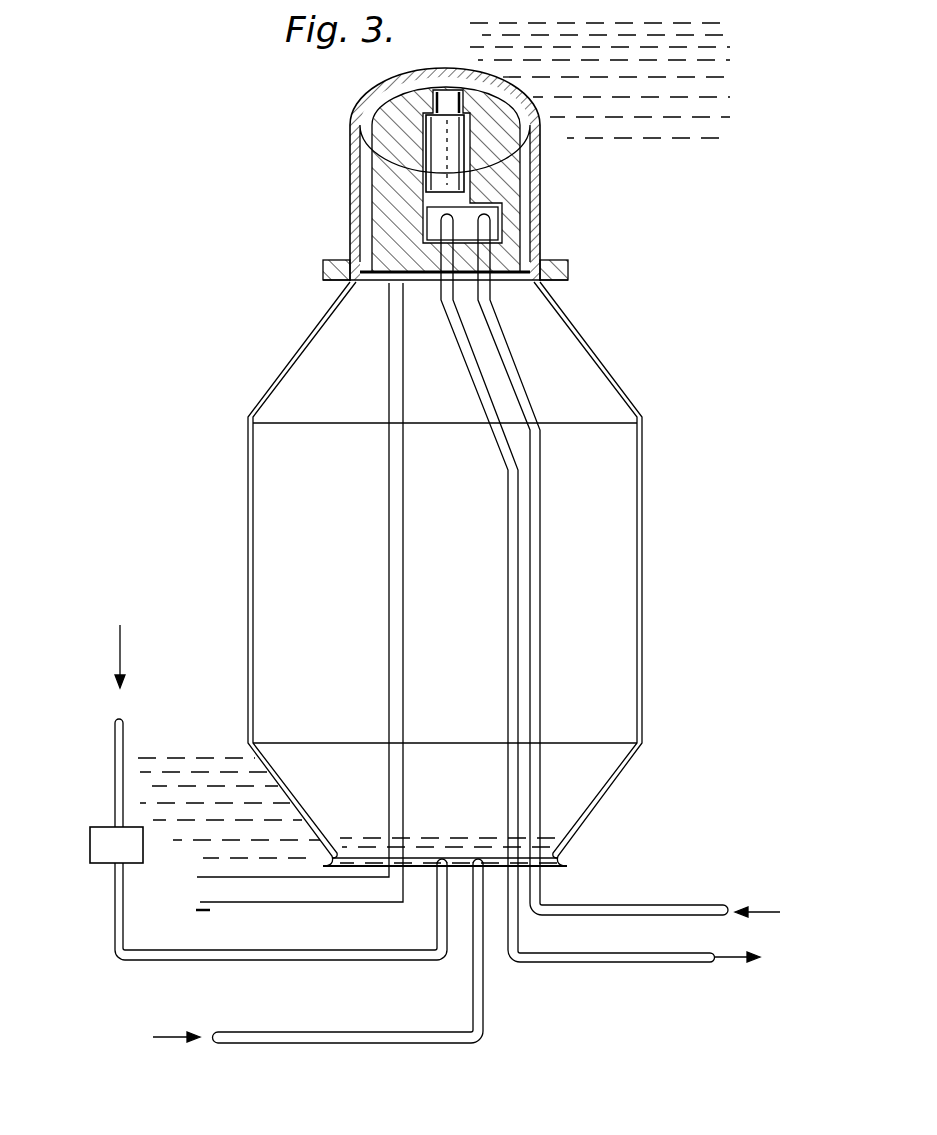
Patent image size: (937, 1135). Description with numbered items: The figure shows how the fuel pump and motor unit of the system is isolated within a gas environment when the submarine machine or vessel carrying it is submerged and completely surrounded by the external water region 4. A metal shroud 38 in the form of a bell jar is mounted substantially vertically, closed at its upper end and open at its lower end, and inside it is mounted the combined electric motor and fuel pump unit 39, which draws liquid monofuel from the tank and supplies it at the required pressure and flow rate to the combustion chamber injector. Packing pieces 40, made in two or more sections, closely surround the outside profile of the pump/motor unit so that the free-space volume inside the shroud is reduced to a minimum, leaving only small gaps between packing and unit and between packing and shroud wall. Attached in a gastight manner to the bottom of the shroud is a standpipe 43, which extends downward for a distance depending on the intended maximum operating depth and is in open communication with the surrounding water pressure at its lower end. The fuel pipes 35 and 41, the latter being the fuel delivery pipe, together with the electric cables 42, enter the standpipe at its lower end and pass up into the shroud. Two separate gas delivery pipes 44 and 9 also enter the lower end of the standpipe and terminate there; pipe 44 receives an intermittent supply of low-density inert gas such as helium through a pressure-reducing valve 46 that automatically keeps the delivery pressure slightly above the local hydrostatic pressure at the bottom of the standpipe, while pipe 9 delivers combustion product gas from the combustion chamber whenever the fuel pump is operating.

The external water region 4 is at (640, 96).
The gas supply pipe 9 is at (352, 1043).
The fuel pipe 35 is at (683, 907).
The shroud 38 is at (354, 122).
The combined electric motor and fuel pump unit 39 is at (436, 168).
The packing pieces 40 is at (500, 160).
The fuel delivery pipe 41 is at (568, 963).
The electric cables 42 is at (383, 698).
The standpipe 43 is at (643, 527).
The gas delivery pipe 44 is at (118, 770).
The pressure-reducing valve 46 is at (107, 858).